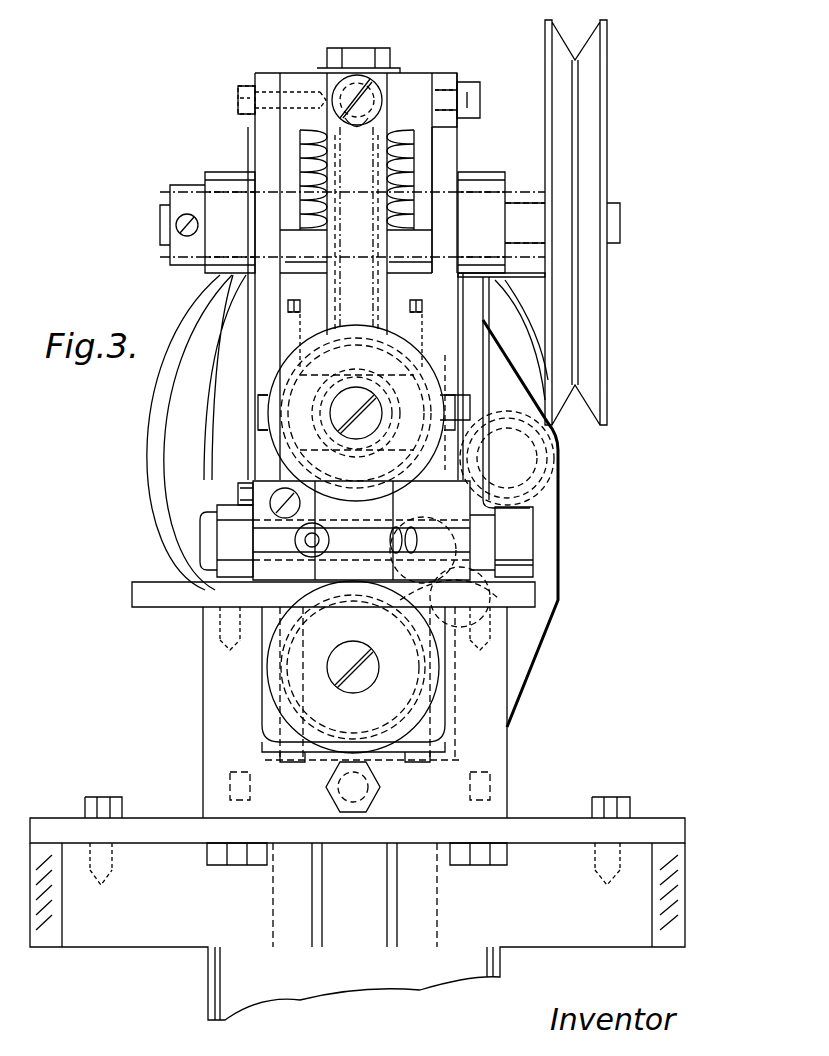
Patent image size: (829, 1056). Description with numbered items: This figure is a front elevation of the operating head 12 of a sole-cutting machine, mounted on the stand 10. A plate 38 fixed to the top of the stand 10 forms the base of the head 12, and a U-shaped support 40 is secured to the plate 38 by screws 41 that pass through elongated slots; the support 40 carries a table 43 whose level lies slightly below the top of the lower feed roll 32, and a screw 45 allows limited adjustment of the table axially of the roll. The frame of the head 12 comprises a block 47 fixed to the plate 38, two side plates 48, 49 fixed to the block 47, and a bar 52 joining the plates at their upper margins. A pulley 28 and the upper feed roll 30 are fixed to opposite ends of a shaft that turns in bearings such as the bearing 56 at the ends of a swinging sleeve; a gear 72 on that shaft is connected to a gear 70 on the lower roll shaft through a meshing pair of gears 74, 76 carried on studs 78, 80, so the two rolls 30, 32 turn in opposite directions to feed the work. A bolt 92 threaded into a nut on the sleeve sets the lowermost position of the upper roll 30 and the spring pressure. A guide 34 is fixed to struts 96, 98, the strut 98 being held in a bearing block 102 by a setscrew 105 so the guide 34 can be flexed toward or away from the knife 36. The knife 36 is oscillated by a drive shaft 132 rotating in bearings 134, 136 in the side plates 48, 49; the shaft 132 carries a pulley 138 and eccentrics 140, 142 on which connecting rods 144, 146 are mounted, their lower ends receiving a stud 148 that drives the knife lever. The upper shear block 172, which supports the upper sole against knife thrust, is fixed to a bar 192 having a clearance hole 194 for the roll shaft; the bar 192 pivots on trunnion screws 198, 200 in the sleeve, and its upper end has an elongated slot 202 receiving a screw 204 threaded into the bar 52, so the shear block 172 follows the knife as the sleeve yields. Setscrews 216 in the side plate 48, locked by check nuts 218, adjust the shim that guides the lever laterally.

The stand 10 is at (308, 978).
The operating head 12 is at (224, 142).
The pulley 28 is at (178, 312).
The upper feed roll 30 is at (396, 335).
The lower feed roll 32 is at (270, 712).
The guide 34 is at (330, 553).
The knife 36 is at (322, 615).
The plate 38 is at (165, 822).
The U-shaped support 40 is at (505, 788).
The screws 41 is at (240, 858).
The table 43 is at (148, 598).
The screw 45 is at (378, 793).
The block 47 is at (445, 768).
The side plate 48 is at (262, 372).
The side plate 49 is at (460, 145).
The bar 52 is at (302, 80).
The bearing 56 is at (386, 390).
The gear 70 is at (430, 682).
The gear 72 is at (444, 410).
The gear 74 is at (538, 463).
The gear 76 is at (560, 632).
The stud 78 is at (490, 480).
The stud 80 is at (490, 597).
The bolt 92 is at (380, 58).
The strut 96 is at (256, 541).
The strut 98 is at (361, 532).
The bearing block 102 is at (465, 470).
The setscrew 105 is at (532, 548).
The drive shaft 132 is at (618, 222).
The bearing 134 is at (298, 185).
The bearing 136 is at (418, 185).
The pulley 138 is at (594, 162).
The eccentric 140 is at (224, 200).
The eccentric 142 is at (482, 248).
The connecting rod 144 is at (240, 352).
The connecting rod 146 is at (470, 410).
The stud 148 is at (202, 549).
The upper shear block 172 is at (340, 465).
The bar 192 is at (425, 77).
The clearance hole 194 is at (356, 388).
The trunnion screw 198 is at (256, 398).
The trunnion screw 200 is at (455, 400).
The elongated slot 202 is at (355, 128).
The screw 204 is at (350, 80).
The setscrews 216 is at (240, 500).
The check nuts 218 is at (240, 492).